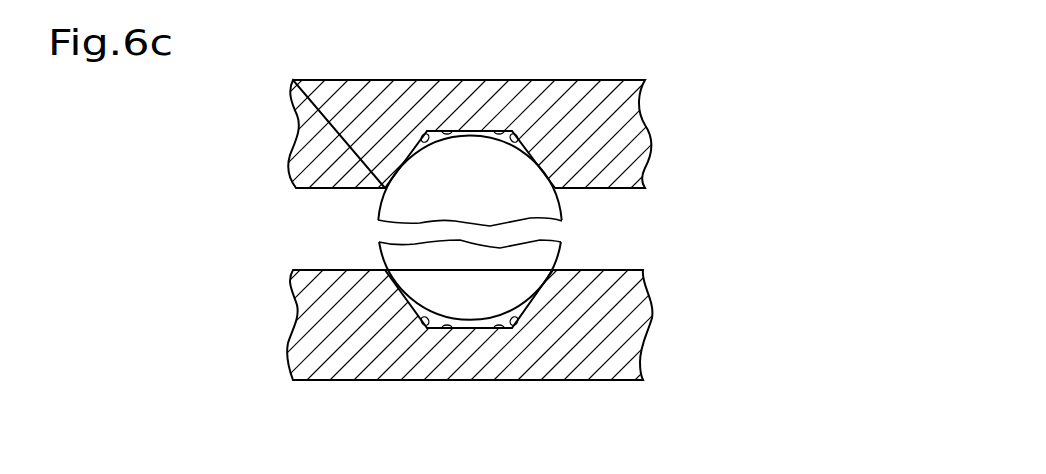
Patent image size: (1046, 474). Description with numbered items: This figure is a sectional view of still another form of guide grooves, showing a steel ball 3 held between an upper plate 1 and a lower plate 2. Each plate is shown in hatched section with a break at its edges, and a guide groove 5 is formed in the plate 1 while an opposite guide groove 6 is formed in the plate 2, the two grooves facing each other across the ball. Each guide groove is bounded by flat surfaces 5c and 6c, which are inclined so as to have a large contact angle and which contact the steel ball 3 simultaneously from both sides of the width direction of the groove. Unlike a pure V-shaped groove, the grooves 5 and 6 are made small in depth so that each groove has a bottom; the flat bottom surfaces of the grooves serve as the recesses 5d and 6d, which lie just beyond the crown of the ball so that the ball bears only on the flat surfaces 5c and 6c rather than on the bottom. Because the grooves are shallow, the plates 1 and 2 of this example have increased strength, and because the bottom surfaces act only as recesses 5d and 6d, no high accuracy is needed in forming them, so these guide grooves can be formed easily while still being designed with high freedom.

The plate 1 is at (617, 125).
The plate 2 is at (642, 317).
The steel ball 3 is at (510, 205).
The guide groove 5 is at (466, 131).
The flat surfaces 5c is at (430, 132).
The recess 5d is at (510, 131).
The guide groove 6 is at (493, 328).
The flat surfaces 6c is at (421, 328).
The recess 6d is at (452, 328).